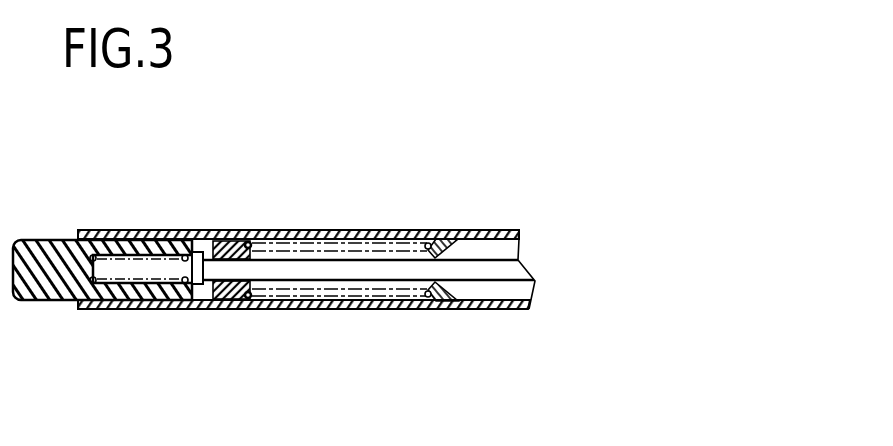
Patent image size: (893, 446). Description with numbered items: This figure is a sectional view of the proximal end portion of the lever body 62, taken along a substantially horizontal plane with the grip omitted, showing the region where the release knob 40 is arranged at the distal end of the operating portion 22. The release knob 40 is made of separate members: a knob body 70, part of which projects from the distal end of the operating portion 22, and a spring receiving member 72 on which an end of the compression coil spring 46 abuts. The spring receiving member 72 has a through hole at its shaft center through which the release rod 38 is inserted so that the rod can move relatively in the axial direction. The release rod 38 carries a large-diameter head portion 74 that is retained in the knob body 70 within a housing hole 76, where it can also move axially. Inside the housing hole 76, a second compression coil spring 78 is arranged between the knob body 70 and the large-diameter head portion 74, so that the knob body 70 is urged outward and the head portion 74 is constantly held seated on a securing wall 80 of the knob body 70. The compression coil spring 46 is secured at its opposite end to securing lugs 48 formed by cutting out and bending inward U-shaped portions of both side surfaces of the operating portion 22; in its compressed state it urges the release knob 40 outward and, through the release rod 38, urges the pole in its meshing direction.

The operating portion 22 is at (345, 302).
The release rod 38 is at (333, 268).
The release knob 40 is at (108, 289).
The compression coil spring 46 is at (248, 240).
The securing lugs 48 is at (433, 249).
The lever body 62 is at (321, 243).
The knob body 70 is at (49, 262).
The spring receiving member 72 is at (238, 290).
The large-diameter head portion 74 is at (194, 286).
The housing hole 76 is at (125, 286).
The compression coil spring 78 is at (96, 257).
The securing wall 80 is at (208, 251).